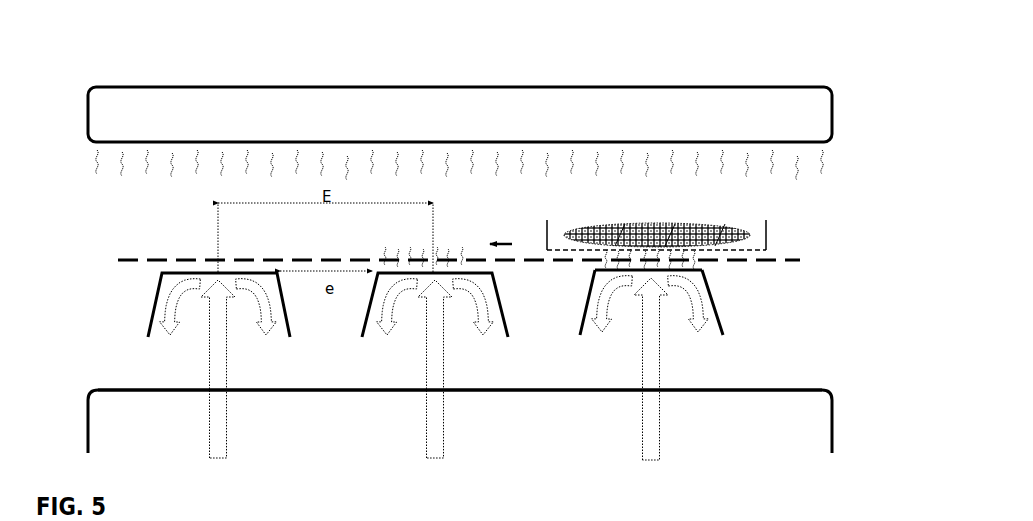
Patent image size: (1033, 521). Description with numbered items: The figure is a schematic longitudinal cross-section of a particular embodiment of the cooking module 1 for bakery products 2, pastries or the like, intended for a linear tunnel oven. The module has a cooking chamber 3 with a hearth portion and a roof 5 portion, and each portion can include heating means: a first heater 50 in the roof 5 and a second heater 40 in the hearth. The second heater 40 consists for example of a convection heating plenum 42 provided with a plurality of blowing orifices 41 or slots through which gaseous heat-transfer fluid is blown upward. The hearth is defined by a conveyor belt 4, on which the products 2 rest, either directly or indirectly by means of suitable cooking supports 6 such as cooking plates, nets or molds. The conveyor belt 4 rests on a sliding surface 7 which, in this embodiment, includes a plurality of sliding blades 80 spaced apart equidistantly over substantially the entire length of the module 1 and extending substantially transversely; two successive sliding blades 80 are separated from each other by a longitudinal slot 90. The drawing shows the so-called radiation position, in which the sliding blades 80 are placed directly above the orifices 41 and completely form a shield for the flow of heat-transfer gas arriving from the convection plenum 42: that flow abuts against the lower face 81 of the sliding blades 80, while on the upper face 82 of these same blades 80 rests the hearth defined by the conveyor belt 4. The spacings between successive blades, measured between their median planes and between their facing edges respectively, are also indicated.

The cooking module 1 is at (480, 77).
The bakery products 2 is at (642, 219).
The cooking chamber 3 is at (108, 206).
The conveyor belt 4 is at (113, 259).
The roof 5 is at (718, 142).
The cooking supports 6 is at (769, 235).
The sliding surface 7 is at (161, 273).
The second heater 40 is at (87, 436).
The blowing orifices 41 is at (229, 399).
The convection heating plenum 42 is at (148, 402).
The first heater 50 is at (835, 115).
The sliding blades 80 is at (726, 322).
The lower face 81 is at (670, 278).
The upper face 82 is at (704, 271).
The longitudinal slot 90 is at (540, 284).